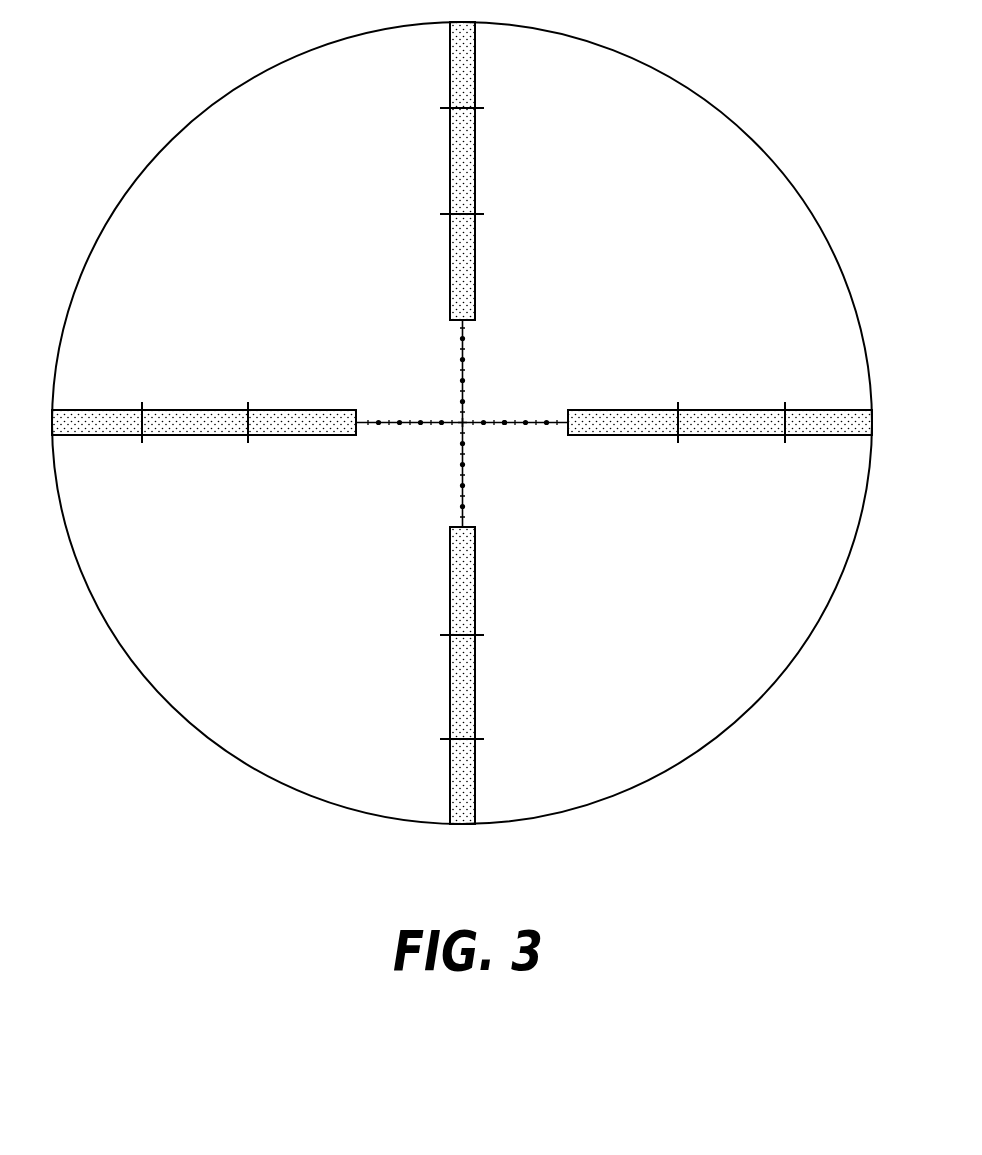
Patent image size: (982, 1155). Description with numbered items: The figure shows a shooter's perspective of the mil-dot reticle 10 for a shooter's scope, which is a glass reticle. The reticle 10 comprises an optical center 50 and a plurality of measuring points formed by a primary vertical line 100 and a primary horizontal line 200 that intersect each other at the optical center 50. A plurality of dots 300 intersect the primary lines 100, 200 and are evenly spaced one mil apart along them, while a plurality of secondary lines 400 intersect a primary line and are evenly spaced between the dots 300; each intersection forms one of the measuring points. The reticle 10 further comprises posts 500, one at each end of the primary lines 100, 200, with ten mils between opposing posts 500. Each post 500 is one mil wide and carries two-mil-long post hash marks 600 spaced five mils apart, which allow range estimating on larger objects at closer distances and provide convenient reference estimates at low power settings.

The reticle 10 is at (771, 158).
The optical center 50 is at (458, 425).
The primary vertical line 100 is at (475, 320).
The primary horizontal line 200 is at (543, 420).
The dots 300 is at (463, 381).
The secondary lines 400 is at (512, 428).
The posts 500 is at (648, 410).
The post hash marks 600 is at (680, 437).